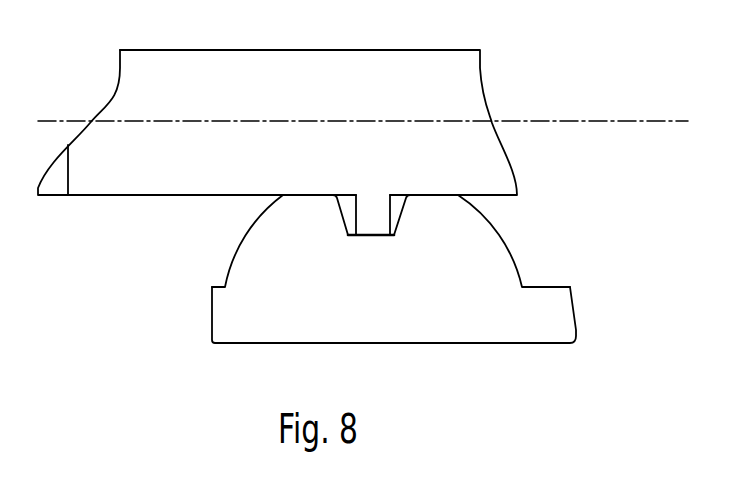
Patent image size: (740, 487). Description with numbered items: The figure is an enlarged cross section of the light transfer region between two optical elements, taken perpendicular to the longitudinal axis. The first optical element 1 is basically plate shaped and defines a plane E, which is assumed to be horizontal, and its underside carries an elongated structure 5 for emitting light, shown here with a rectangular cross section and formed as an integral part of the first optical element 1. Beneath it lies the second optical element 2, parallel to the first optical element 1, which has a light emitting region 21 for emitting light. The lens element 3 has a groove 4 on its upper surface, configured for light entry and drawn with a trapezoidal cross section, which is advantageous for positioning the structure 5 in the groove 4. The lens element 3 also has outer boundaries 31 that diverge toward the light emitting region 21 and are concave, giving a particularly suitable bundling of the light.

The first optical element 1 is at (245, 70).
The second optical element 2 is at (371, 297).
The lens element 3 is at (371, 297).
The groove 4 is at (397, 210).
The elongated structure 5 is at (372, 213).
The light emitting region 21 is at (512, 343).
The outer boundaries 31 is at (234, 255).
The plane E is at (607, 121).